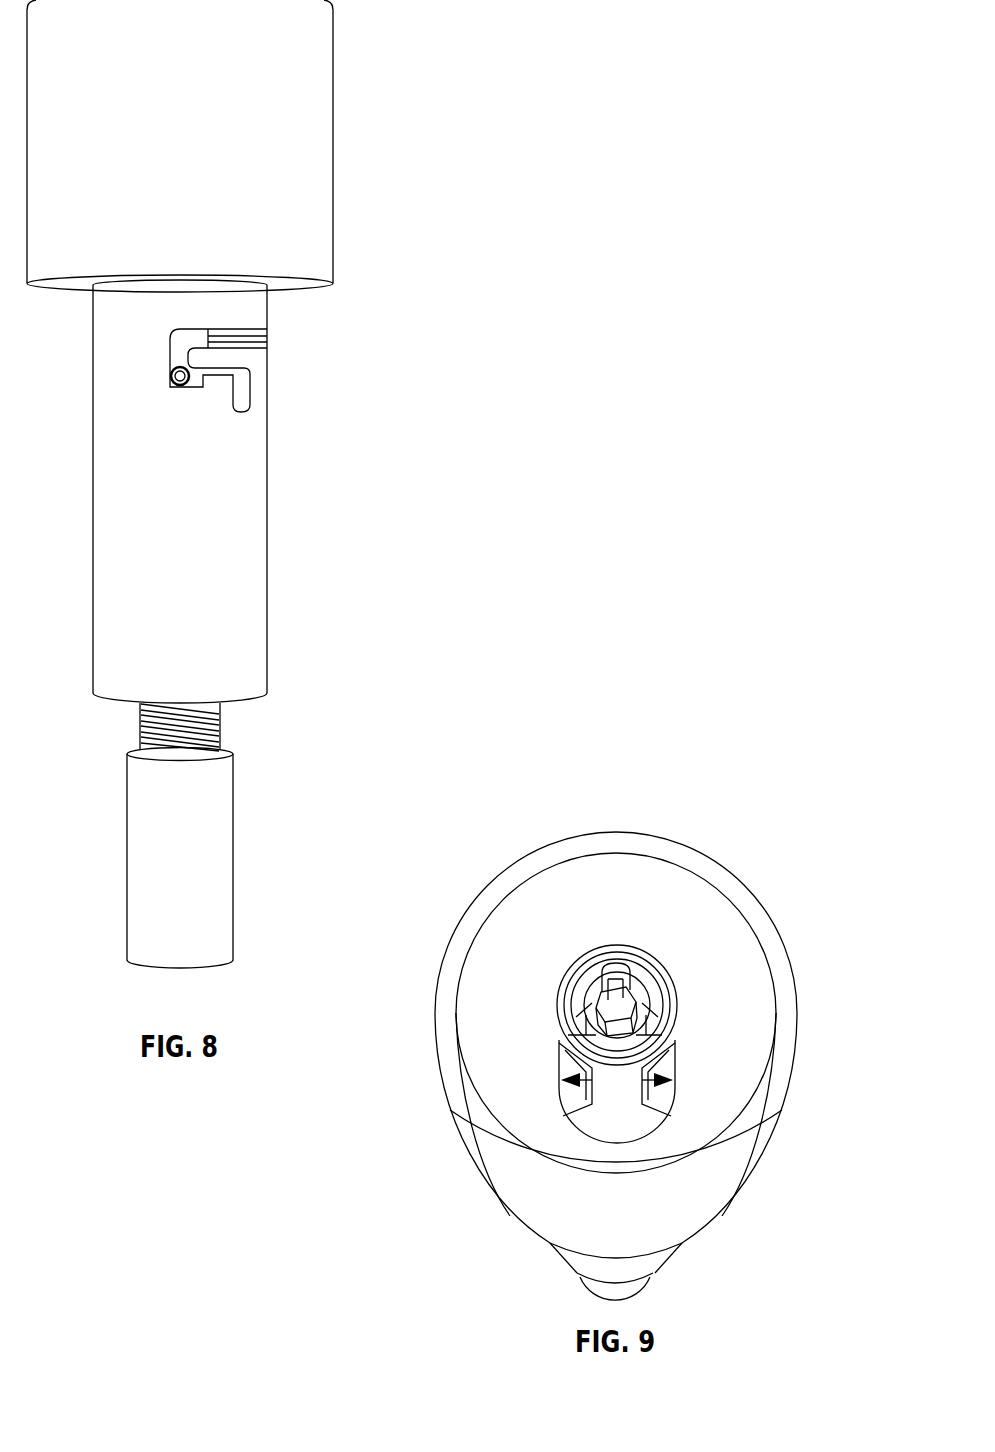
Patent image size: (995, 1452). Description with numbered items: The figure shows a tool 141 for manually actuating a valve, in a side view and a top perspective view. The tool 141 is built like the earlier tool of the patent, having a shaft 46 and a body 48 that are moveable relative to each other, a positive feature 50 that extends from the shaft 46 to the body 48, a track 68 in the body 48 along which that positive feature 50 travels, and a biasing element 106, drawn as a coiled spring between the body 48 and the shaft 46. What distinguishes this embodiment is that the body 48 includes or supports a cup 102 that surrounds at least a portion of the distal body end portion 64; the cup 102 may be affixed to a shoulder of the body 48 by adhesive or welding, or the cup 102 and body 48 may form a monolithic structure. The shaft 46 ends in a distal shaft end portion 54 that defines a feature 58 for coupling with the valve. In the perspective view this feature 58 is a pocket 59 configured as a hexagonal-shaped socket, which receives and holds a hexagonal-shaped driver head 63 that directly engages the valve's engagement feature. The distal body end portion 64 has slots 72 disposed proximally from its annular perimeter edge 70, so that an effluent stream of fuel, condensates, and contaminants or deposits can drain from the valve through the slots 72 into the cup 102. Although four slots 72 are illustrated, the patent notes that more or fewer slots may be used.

In FIG. 8, the cup 102 is at (336, 150).
In FIG. 9, the cup 102 is at (463, 1088).
In FIG. 8, the tool 141 is at (408, 272).
In FIG. 9, the tool 141 is at (796, 824).
In FIG. 8, the body 48 is at (252, 490).
In FIG. 9, the body 48 is at (653, 1117).
In FIG. 8, the track 68 is at (160, 349).
In FIG. 8, the positive feature 50 is at (178, 378).
In FIG. 8, the biasing element 106 is at (140, 712).
In FIG. 8, the shaft 46 is at (222, 736).
In FIG. 9, the shaft 46 is at (675, 1037).
In FIG. 9, the feature 58 is at (643, 975).
In FIG. 9, the pocket 59 is at (648, 994).
In FIG. 9, the hexagonal-shaped driver head 63 is at (597, 950).
In FIG. 9, the annular perimeter edge 70 is at (560, 985).
In FIG. 9, the distal shaft end portion 54 is at (563, 1030).
In FIG. 9, the slots 72 is at (560, 1080).
In FIG. 9, the distal body end portion 64 is at (610, 1105).